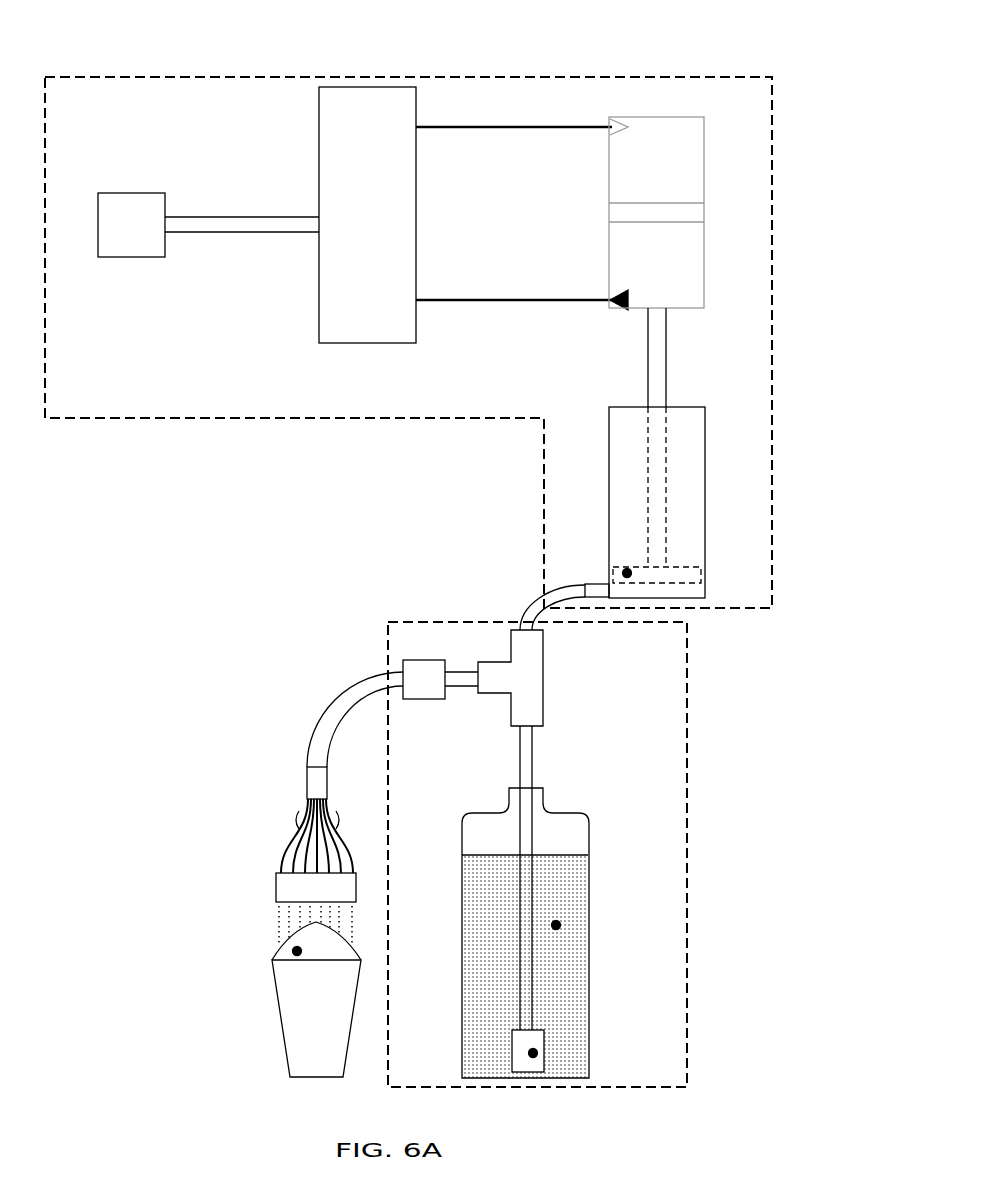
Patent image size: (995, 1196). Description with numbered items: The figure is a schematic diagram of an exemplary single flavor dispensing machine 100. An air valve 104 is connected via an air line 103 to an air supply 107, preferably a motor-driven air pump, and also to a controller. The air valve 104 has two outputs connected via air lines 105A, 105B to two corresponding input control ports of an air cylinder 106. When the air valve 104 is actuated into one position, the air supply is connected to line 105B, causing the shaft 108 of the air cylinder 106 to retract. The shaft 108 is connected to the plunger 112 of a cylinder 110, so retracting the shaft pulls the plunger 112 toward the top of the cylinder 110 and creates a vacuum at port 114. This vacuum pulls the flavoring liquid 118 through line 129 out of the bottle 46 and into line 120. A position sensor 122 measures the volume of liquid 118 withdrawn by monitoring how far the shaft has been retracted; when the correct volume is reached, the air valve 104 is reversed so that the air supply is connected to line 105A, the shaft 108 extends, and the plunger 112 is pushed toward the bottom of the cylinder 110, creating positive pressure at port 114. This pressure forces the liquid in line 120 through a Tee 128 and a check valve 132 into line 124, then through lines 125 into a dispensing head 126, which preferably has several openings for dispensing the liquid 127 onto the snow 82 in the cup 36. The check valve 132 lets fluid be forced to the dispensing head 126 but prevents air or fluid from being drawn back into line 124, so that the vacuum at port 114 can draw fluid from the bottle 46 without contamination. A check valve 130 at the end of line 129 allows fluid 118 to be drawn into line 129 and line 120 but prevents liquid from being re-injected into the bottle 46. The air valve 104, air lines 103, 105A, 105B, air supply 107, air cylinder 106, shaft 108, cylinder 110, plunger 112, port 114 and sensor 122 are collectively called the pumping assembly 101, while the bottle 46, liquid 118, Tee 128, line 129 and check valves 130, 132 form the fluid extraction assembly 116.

The single flavor dispensing machine 100 is at (182, 547).
The pumping assembly 101 is at (205, 424).
The air line 103 is at (296, 213).
The air valve 104 is at (384, 181).
The air line 105A is at (530, 122).
The air line 105B is at (513, 302).
The air cylinder 106 is at (673, 148).
The air supply 107 is at (131, 225).
The shaft 108 is at (642, 356).
The cylinder 110 is at (605, 415).
The plunger 112 is at (626, 568).
The port 114 is at (597, 583).
The fluid extraction assembly 116 is at (516, 1100).
The flavoring liquid 118 is at (562, 924).
The line 120 is at (522, 603).
The position sensor 122 is at (604, 208).
The line 124 is at (333, 710).
The lines 125 is at (294, 822).
The dispensing head 126 is at (333, 901).
The dispensed liquid 127 is at (265, 916).
The Tee 128 is at (551, 685).
The line 129 is at (515, 755).
The check valve 130 is at (538, 1052).
The check valve 132 is at (420, 655).
The cup 36 is at (328, 1059).
The bottle 46 is at (594, 818).
The snow 82 is at (292, 951).